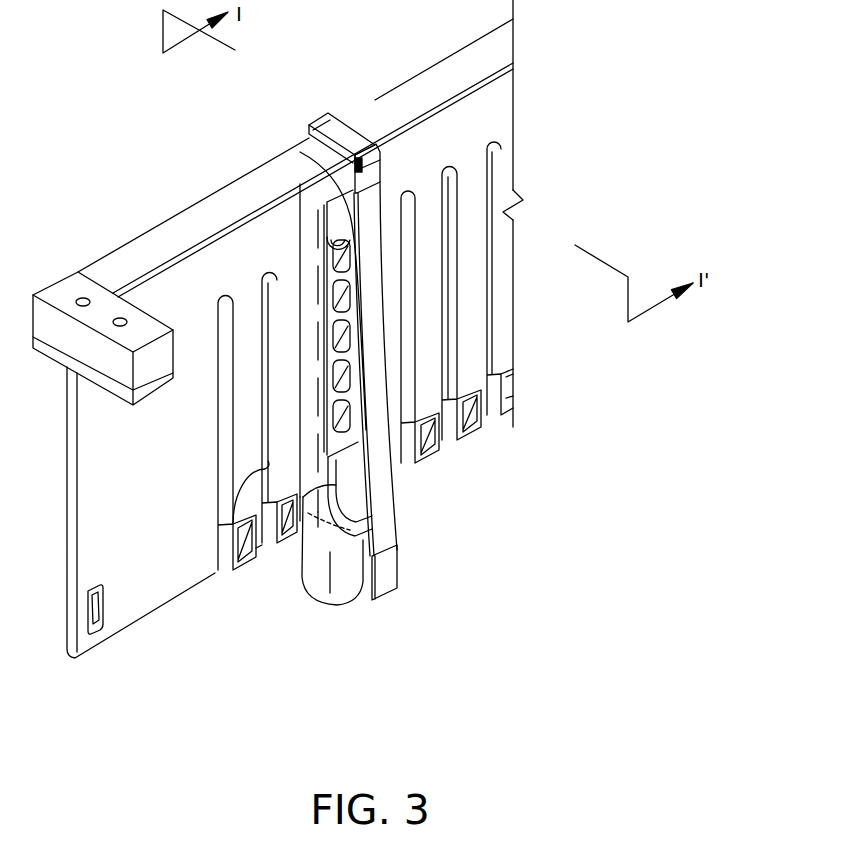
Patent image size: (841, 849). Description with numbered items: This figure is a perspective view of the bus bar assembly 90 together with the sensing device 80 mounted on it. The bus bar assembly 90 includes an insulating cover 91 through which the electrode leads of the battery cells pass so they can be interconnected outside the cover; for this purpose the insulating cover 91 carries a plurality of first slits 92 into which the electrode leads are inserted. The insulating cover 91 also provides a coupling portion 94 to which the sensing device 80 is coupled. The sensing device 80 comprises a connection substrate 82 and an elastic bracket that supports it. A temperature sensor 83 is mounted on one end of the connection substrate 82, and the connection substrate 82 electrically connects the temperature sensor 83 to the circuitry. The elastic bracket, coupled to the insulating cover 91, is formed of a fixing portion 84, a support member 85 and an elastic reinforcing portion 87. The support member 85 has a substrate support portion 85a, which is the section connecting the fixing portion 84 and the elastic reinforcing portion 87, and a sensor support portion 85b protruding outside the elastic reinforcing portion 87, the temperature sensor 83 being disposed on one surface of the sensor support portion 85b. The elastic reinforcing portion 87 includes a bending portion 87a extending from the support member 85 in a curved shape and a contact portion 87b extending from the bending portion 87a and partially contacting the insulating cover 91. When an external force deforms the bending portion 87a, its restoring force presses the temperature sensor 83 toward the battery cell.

The sensing device 80 is at (530, 596).
The connection substrate 82 is at (384, 420).
The temperature sensor 83 is at (398, 575).
The fixing portion 84 is at (306, 148).
The support member 85 is at (441, 358).
The substrate support portion 85a is at (370, 478).
The sensor support portion 85b is at (375, 565).
The elastic reinforcing portion 87 is at (330, 592).
The bending portion 87a is at (347, 540).
The contact portion 87b is at (306, 596).
The bus bar assembly 90 is at (156, 198).
The insulating cover 91 is at (125, 600).
The first slits 92 is at (228, 565).
The coupling portion 94 is at (302, 553).